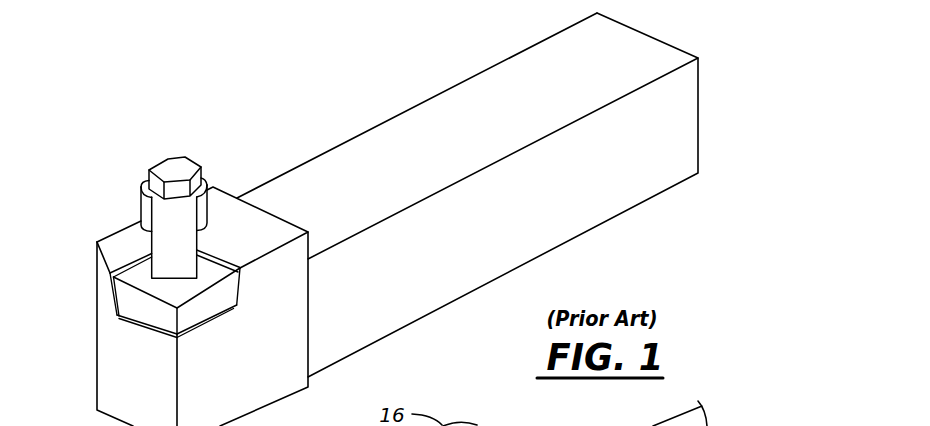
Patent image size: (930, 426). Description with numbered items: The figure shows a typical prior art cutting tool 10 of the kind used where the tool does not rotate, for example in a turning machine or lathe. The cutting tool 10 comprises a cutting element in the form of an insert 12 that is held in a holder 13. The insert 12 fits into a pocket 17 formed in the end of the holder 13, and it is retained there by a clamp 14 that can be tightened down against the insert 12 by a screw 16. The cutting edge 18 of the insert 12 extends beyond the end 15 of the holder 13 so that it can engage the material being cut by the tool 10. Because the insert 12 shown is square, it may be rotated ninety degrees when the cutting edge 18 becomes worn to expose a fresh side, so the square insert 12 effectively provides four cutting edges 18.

The cutting tool 10 is at (357, 100).
The insert 12 is at (212, 266).
The holder 13 is at (538, 75).
The clamp 14 is at (168, 227).
The end 15 is at (123, 360).
The screw 16 is at (168, 169).
The pocket 17 is at (128, 263).
The cutting edge 18 is at (148, 294).